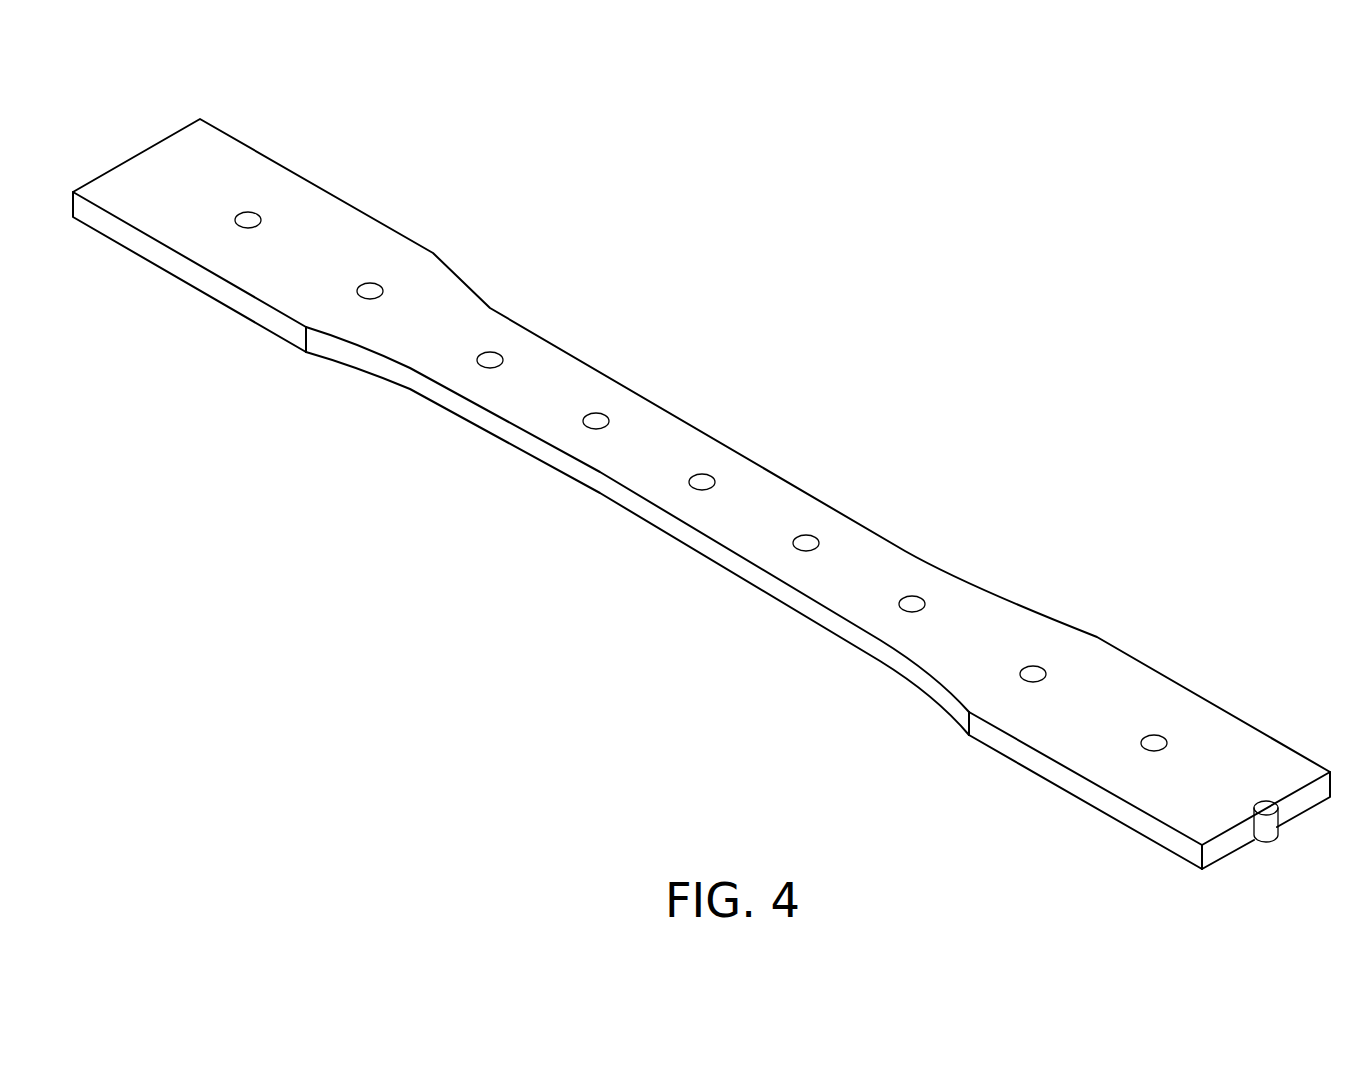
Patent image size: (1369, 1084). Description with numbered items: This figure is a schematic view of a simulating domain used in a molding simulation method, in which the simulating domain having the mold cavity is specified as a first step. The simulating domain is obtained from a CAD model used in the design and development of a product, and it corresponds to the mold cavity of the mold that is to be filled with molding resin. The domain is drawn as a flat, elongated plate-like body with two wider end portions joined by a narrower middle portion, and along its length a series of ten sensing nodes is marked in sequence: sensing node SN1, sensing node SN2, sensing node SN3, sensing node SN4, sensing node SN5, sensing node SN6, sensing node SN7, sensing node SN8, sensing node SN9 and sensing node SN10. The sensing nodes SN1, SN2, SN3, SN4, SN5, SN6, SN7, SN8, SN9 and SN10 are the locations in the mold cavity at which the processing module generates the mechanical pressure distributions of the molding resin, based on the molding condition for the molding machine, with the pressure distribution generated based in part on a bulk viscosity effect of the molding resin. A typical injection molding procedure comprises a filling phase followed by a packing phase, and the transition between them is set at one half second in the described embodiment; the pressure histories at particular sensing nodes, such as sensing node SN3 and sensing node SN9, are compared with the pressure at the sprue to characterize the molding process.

The sensing node SN1 is at (249, 212).
The sensing node SN2 is at (370, 283).
The sensing node SN3 is at (490, 352).
The sensing node SN4 is at (596, 413).
The sensing node SN5 is at (702, 474).
The sensing node SN6 is at (806, 535).
The sensing node SN7 is at (912, 596).
The sensing node SN8 is at (1033, 666).
The sensing node SN9 is at (1154, 735).
The sensing node SN10 is at (1266, 801).